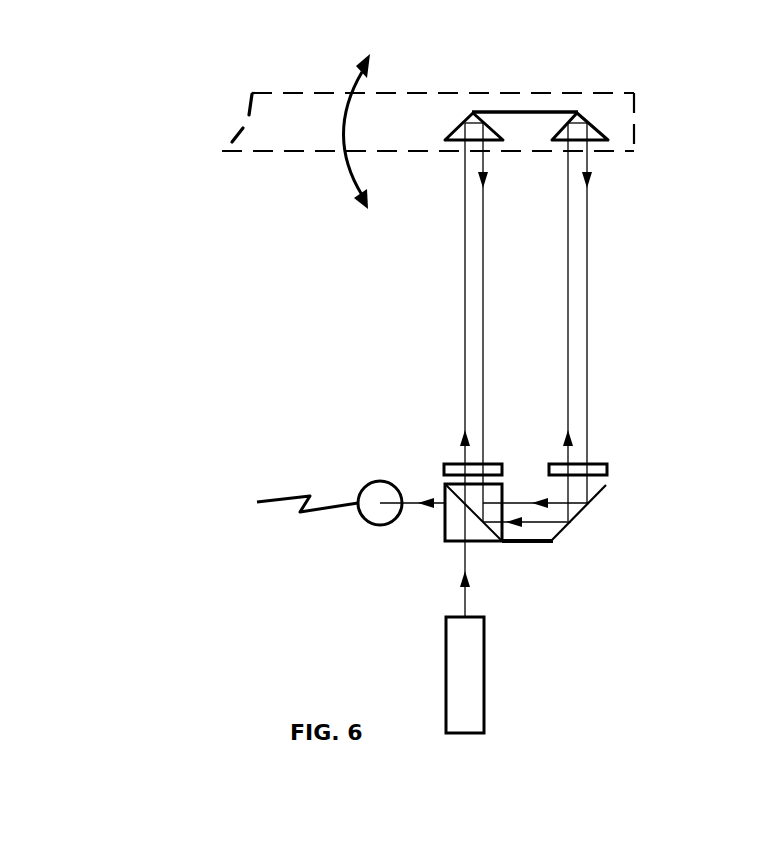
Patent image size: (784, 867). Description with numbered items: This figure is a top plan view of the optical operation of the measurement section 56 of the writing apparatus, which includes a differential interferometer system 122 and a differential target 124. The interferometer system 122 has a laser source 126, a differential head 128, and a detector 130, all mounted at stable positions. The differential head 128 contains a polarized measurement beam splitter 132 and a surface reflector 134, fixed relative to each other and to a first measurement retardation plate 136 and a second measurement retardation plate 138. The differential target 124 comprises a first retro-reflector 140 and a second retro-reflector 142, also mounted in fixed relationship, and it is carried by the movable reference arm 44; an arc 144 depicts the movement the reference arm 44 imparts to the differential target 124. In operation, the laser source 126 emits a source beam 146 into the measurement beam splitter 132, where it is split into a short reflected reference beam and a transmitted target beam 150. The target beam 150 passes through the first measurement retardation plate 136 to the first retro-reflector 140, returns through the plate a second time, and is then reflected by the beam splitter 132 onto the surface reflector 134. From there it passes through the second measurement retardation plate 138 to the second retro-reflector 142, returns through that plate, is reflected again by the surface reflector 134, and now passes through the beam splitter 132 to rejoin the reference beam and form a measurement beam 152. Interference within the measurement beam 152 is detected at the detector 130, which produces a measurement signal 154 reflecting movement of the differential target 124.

The reference arm 44 is at (273, 122).
The measurement section 56 is at (645, 309).
The differential interferometer system 122 is at (672, 702).
The differential target 124 is at (532, 112).
The laser source 126 is at (487, 675).
The differential head 128 is at (523, 543).
The detector 130 is at (360, 488).
The polarized measurement beam splitter 132 is at (460, 542).
The surface reflector 134 is at (580, 513).
The first measurement retardation plate 136 is at (444, 466).
The second measurement retardation plate 138 is at (608, 467).
The first retro-reflector 140 is at (465, 122).
The second retro-reflector 142 is at (598, 130).
The arc 144 is at (343, 172).
The source beam 146 is at (468, 580).
The transmitted target beam 150 is at (587, 405).
The measurement beam 152 is at (427, 506).
The measurement signal 154 is at (273, 503).